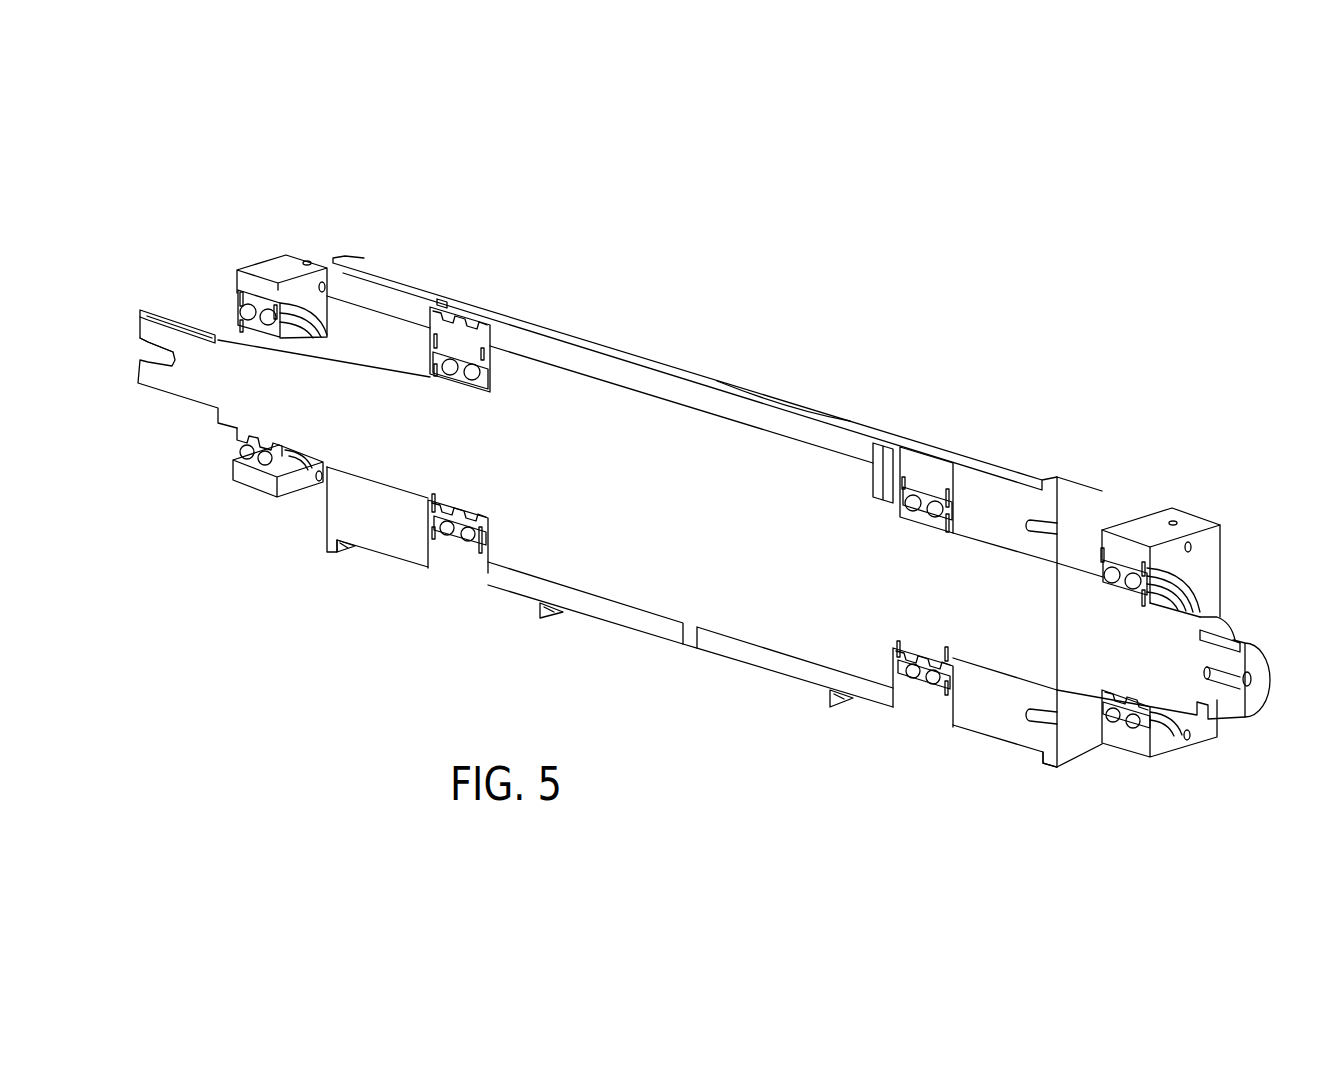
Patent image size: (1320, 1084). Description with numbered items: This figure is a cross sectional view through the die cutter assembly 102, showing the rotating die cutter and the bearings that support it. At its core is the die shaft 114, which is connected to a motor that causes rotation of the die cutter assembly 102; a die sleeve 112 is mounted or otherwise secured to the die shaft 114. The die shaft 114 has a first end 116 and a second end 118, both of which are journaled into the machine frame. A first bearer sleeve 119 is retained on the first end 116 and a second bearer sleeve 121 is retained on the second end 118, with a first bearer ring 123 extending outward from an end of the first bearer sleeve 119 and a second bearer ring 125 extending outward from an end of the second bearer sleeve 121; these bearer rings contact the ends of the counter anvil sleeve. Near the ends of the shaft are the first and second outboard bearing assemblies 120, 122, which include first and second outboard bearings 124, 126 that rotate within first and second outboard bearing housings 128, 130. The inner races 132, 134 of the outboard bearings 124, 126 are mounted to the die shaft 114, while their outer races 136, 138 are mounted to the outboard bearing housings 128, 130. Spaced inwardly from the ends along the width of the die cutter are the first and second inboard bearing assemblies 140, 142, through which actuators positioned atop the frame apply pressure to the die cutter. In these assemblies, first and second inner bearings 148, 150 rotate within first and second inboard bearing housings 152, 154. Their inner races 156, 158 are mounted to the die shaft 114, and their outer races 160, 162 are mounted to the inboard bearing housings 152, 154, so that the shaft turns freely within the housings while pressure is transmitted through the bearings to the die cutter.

The die cutter assembly 102 is at (673, 270).
The die sleeve 112 is at (717, 407).
The die shaft 114 is at (646, 512).
The first end 116 is at (1126, 666).
The second end 118 is at (225, 392).
The first bearer sleeve 119 is at (1000, 720).
The first outboard bearing assembly 120 is at (1212, 573).
The second bearer sleeve 121 is at (388, 545).
The second outboard bearing assembly 122 is at (196, 282).
The first bearer ring 123 is at (1048, 765).
The first outboard bearing 124 is at (1133, 572).
The second bearer ring 125 is at (322, 553).
The second outboard bearing 126 is at (266, 310).
The first outboard bearing housing 128 is at (1186, 514).
The second outboard bearing housing 130 is at (293, 263).
The inner race 132 is at (1140, 535).
The inner race 134 is at (258, 320).
The outer race 136 is at (1102, 567).
The outer race 138 is at (248, 322).
The first inboard bearing assembly 140 is at (952, 430).
The second inboard bearing assembly 142 is at (468, 245).
The first inner bearing 148 is at (945, 510).
The second inner bearing 150 is at (485, 369).
The first inboard bearing housing 152 is at (927, 463).
The second inboard bearing housing 154 is at (480, 316).
The inner race 156 is at (920, 520).
The inner race 158 is at (463, 389).
The outer race 160 is at (915, 494).
The outer race 162 is at (452, 340).